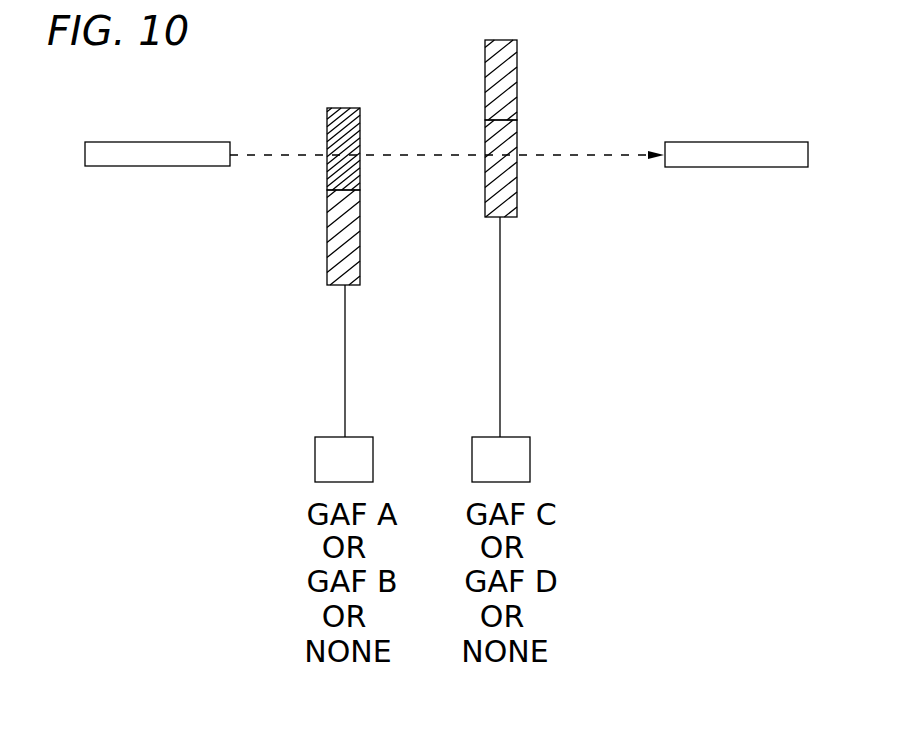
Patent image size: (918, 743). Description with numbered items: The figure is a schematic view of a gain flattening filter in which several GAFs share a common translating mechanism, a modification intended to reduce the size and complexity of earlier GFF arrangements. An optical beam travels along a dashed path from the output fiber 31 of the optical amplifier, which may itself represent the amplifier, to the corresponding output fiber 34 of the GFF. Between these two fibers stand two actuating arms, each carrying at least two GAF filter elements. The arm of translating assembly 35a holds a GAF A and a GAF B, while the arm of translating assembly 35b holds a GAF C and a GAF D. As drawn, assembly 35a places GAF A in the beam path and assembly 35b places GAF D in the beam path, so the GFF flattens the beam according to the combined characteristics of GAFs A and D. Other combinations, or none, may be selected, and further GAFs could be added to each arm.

The output fiber 31 is at (153, 141).
The output fiber from the GFF 34 is at (735, 142).
The translating assembly 35a is at (343, 420).
The translating assembly 35b is at (498, 420).
The GAF A is at (358, 149).
The GAF B is at (358, 237).
The GAF C is at (516, 80).
The GAF D is at (517, 168).